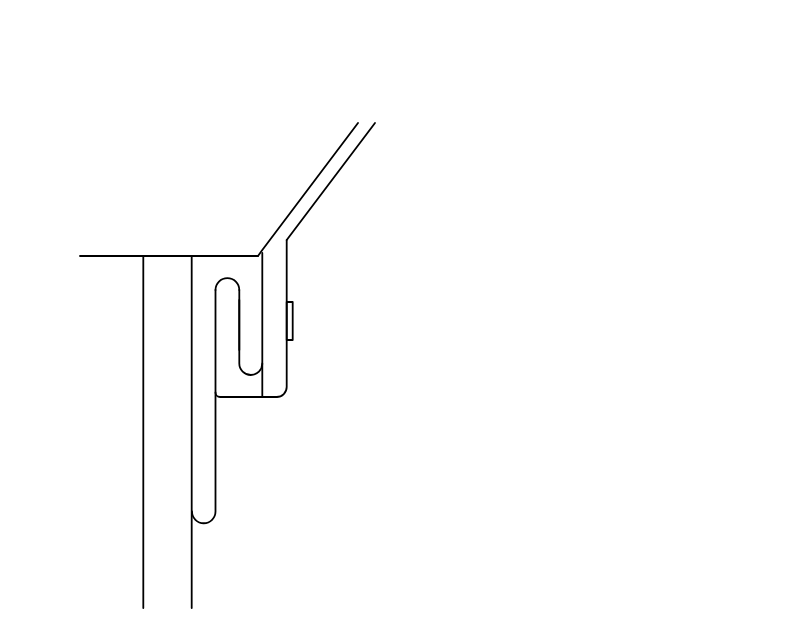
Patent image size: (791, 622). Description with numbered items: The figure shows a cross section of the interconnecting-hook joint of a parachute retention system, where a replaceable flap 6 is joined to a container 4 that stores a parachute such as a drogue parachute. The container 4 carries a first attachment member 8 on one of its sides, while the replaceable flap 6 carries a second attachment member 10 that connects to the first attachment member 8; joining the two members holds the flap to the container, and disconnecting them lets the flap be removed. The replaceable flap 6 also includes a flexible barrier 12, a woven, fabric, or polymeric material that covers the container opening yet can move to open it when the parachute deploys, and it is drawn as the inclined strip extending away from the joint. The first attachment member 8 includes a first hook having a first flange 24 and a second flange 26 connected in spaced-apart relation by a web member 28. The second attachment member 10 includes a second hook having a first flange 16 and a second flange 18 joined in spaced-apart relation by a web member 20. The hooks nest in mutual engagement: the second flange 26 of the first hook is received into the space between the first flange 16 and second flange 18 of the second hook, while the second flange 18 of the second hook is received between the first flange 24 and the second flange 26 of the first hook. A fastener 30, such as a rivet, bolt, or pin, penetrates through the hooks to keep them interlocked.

The container 4 is at (166, 217).
The replaceable flap 6 is at (312, 122).
The first attachment member 8 is at (260, 448).
The second attachment member 10 is at (394, 366).
The flexible barrier 12 is at (318, 190).
The first flange 16 is at (278, 267).
The second flange 18 is at (220, 310).
The web member 20 is at (258, 383).
The first flange 24 is at (200, 372).
The second flange 26 is at (255, 333).
The web member 28 is at (228, 270).
The fastener 30 is at (290, 317).